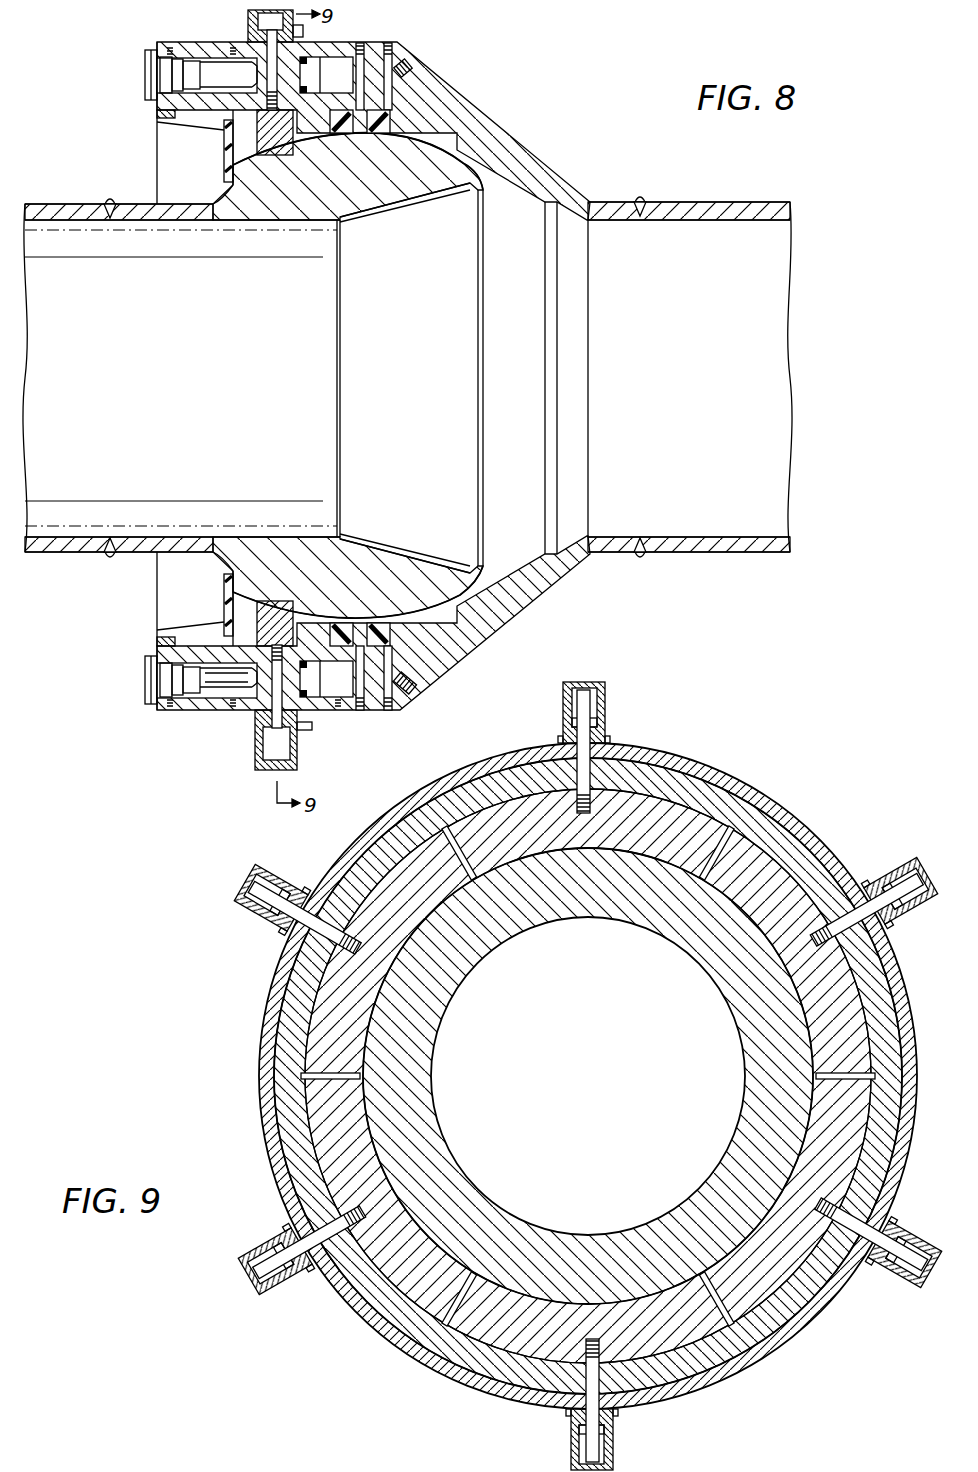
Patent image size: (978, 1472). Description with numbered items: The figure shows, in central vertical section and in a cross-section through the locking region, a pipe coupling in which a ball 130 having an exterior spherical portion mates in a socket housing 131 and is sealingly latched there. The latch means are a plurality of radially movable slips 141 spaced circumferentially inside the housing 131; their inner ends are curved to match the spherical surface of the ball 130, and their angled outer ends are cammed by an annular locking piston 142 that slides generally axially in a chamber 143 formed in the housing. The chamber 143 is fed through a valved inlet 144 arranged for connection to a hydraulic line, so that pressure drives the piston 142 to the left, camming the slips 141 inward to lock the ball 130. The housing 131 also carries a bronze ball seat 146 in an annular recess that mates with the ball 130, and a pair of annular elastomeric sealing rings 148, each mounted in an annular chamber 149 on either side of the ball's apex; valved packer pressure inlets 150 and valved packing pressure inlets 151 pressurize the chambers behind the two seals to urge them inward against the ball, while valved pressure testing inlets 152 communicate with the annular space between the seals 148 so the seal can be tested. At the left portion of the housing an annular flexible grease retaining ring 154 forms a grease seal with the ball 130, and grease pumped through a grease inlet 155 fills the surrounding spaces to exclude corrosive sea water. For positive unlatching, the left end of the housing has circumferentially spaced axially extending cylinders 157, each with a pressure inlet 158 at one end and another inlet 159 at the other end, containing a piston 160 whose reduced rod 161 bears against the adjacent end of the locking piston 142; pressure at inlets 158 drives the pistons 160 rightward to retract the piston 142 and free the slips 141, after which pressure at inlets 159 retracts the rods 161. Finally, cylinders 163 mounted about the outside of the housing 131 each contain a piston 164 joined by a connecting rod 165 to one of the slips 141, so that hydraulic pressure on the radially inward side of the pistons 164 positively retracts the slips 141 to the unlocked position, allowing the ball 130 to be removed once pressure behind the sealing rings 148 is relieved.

In FIG. 8, the ball 130 is at (291, 207).
In FIG. 9, the ball 130 is at (413, 1078).
In FIG. 8, the socket housing 131 is at (476, 102).
In FIG. 8, the slips 141 is at (257, 137).
In FIG. 9, the slips 141 is at (300, 998).
In FIG. 8, the annular locking piston 142 is at (433, 243).
In FIG. 9, the annular locking piston 142 is at (287, 1048).
In FIG. 8, the chamber 143 is at (380, 42).
In FIG. 8, the valved inlet 144 is at (340, 712).
In FIG. 8, the ball seat 146 is at (440, 623).
In FIG. 8, the annular elastomeric sealing rings 148 is at (377, 623).
In FIG. 8, the annular chamber 149 is at (340, 623).
In FIG. 8, the valved packer pressure inlets 150 is at (412, 692).
In FIG. 8, the valved packing pressure inlets 151 is at (390, 712).
In FIG. 8, the valved pressure testing inlets 152 is at (358, 712).
In FIG. 8, the grease retaining ring 154 is at (231, 182).
In FIG. 8, the grease inlet 155 is at (160, 648).
In FIG. 8, the cylinders 157 is at (218, 700).
In FIG. 8, the pressure inlet 158 is at (170, 714).
In FIG. 8, the inlet 159 is at (237, 714).
In FIG. 8, the piston 160 is at (197, 697).
In FIG. 8, the rod 161 is at (157, 675).
In FIG. 8, the cylinders 163 is at (248, 13).
In FIG. 9, the cylinders 163 is at (262, 912).
In FIG. 8, the piston 164 is at (267, 27).
In FIG. 8, the connecting rod 165 is at (207, 140).